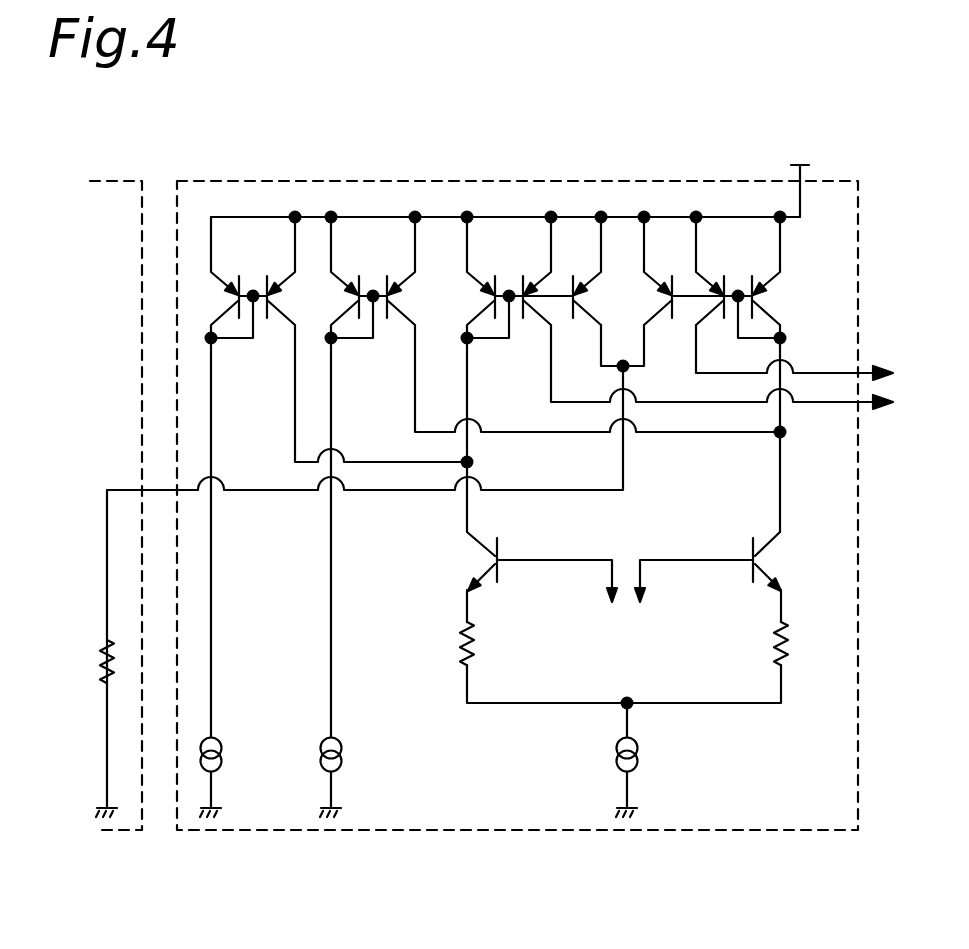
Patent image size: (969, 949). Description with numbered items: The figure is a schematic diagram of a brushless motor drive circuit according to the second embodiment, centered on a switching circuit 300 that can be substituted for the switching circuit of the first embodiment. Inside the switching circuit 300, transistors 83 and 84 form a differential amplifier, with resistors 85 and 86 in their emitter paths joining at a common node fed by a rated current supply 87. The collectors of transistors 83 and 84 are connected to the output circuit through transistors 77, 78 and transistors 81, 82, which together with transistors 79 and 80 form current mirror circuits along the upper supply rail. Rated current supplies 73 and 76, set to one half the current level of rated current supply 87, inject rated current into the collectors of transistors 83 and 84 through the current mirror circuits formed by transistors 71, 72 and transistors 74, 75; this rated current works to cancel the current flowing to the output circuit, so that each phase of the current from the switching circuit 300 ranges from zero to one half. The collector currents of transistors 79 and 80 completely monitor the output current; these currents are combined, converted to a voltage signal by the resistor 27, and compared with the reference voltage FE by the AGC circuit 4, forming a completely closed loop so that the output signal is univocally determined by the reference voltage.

The AGC circuit 4 is at (112, 182).
The switching circuit 300 is at (515, 182).
The resistor 27 is at (100, 650).
The transistor 71 is at (233, 277).
The transistor 72 is at (277, 313).
The rated current supply 73 is at (230, 755).
The transistor 74 is at (353, 277).
The transistor 75 is at (397, 313).
The rated current supply 76 is at (350, 755).
The transistor 77 is at (488, 277).
The transistor 78 is at (533, 313).
The transistor 79 is at (580, 292).
The transistor 80 is at (672, 319).
The transistor 81 is at (710, 278).
The transistor 82 is at (777, 295).
The transistor 83 is at (503, 552).
The transistor 84 is at (764, 561).
The resistor 85 is at (478, 648).
The resistor 86 is at (792, 635).
The rated current supply 87 is at (640, 752).